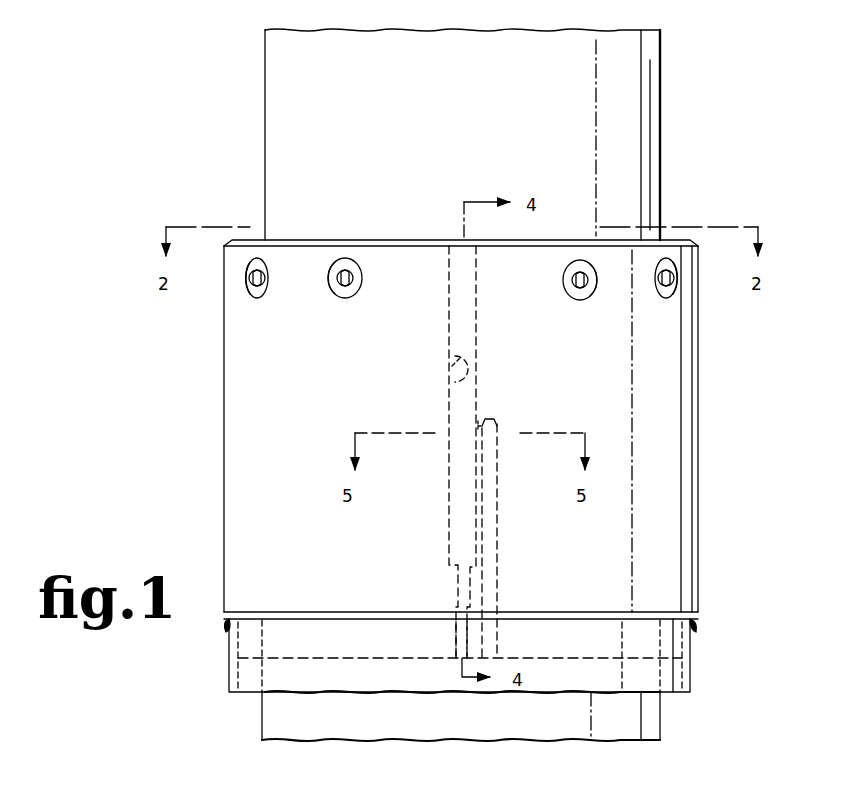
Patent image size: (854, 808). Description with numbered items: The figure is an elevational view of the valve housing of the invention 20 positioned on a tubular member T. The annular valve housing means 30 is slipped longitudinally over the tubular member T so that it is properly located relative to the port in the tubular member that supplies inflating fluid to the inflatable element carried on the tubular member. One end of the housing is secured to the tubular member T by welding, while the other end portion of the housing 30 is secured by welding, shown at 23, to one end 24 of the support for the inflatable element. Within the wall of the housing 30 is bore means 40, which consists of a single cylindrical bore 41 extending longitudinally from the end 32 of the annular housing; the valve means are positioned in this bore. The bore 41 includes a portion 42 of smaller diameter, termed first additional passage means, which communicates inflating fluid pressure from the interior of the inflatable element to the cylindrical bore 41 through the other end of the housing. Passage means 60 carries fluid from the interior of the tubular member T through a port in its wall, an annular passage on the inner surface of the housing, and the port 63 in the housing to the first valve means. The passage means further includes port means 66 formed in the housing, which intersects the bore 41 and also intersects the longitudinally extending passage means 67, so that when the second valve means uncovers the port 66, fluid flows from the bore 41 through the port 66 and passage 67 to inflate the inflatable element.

The tubular member T is at (262, 716).
The annular valve housing means 20 is at (204, 414).
The weld 23 is at (701, 626).
The end of the support for the inflatable element 24 is at (699, 648).
The annular valve housing means 30 is at (703, 498).
The end of the annular housing 32 is at (662, 238).
The bore means 40 is at (479, 358).
The cylindrical bore 41 is at (452, 381).
The first additional passage means 42 is at (458, 637).
The passage means 60 is at (498, 565).
The port 63 is at (461, 356).
The port means 66 is at (484, 418).
The longitudinally extending passage means 67 is at (500, 497).